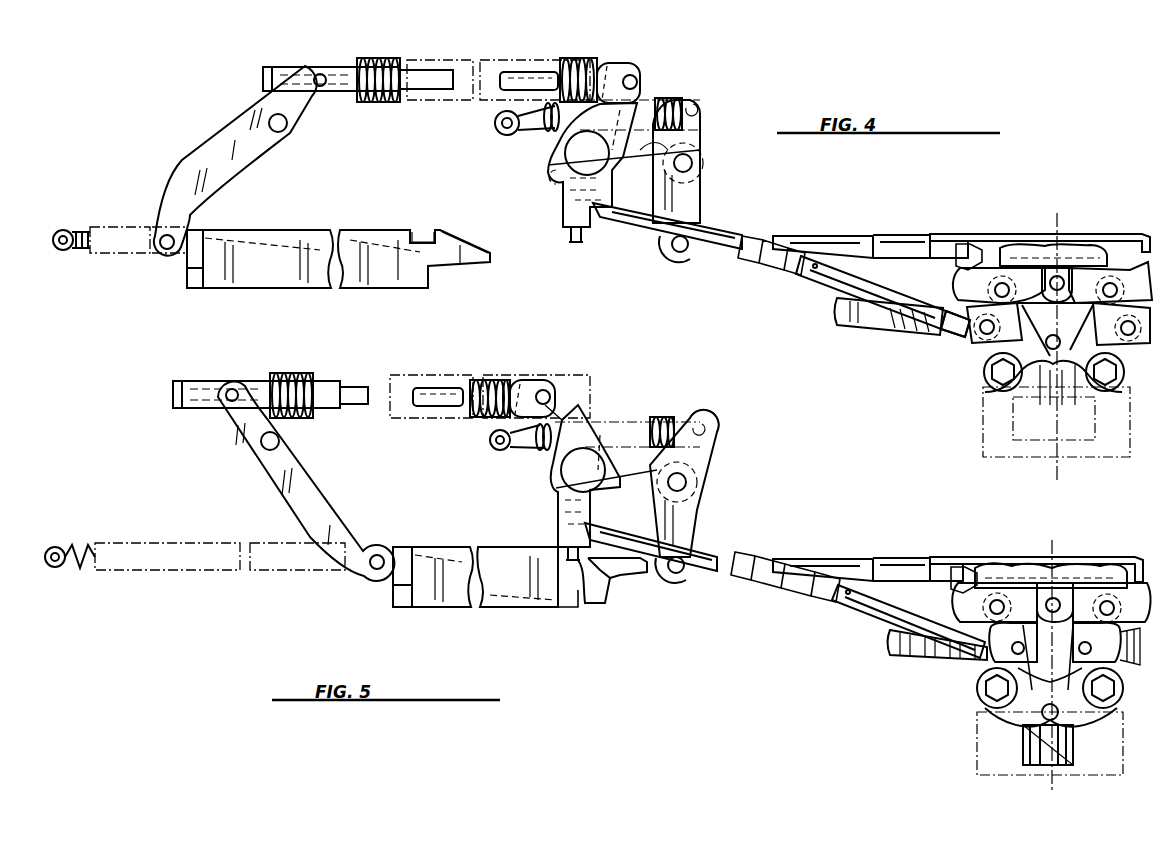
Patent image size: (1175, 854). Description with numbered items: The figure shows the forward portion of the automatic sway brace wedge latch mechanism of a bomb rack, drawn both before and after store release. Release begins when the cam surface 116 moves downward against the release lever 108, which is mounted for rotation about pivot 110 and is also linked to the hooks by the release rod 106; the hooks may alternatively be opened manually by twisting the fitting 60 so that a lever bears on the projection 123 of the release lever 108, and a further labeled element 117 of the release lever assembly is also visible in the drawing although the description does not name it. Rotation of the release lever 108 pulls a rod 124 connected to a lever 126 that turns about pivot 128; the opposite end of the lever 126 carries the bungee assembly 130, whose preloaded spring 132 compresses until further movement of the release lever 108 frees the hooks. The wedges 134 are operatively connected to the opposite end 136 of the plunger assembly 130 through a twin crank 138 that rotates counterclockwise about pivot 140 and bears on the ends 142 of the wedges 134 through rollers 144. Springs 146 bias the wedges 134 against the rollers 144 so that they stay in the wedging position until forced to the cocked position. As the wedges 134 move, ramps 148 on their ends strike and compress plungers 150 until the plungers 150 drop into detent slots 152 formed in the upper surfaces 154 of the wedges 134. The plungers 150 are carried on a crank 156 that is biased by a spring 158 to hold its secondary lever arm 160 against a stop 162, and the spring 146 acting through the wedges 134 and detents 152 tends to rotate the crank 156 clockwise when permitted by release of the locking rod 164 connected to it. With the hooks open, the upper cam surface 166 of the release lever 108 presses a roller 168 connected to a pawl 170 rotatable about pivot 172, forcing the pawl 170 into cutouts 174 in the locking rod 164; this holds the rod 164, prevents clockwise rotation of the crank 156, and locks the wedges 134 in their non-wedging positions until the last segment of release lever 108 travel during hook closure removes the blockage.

In FIG. 4, the fitting 60 is at (1037, 380).
In FIG. 5, the fitting 60 is at (1050, 721).
In FIG. 4, the release rod 106 is at (880, 322).
In FIG. 5, the release rod 106 is at (912, 650).
In FIG. 4, the release lever 108 is at (1000, 340).
In FIG. 5, the release lever 108 is at (993, 652).
In FIG. 4, the pivot 110 is at (1000, 372).
In FIG. 5, the pivot 110 is at (990, 690).
In FIG. 4, the cam surface 116 is at (1052, 322).
In FIG. 4, the base member 117 is at (1048, 352).
In FIG. 5, the base member 117 is at (1023, 732).
In FIG. 4, the projection 123 is at (1057, 356).
In FIG. 5, the projection 123 is at (1040, 708).
In FIG. 4, the rod 124 is at (835, 276).
In FIG. 5, the rod 124 is at (868, 612).
In FIG. 4, the lever 126 is at (548, 170).
In FIG. 5, the lever 126 is at (574, 405).
In FIG. 4, the pivot 128 is at (565, 160).
In FIG. 5, the pivot 128 is at (560, 470).
In FIG. 4, the bungee assembly 130 is at (527, 62).
In FIG. 5, the bungee assembly 130 is at (418, 375).
In FIG. 4, the preloaded spring 132 is at (398, 66).
In FIG. 5, the preloaded spring 132 is at (297, 373).
In FIG. 4, the wedges 134 is at (333, 232).
In FIG. 5, the wedges 134 is at (488, 547).
In FIG. 4, the opposite end 136 is at (287, 67).
In FIG. 5, the opposite end 136 is at (210, 356).
In FIG. 4, the twin crank 138 is at (245, 170).
In FIG. 5, the twin crank 138 is at (306, 474).
In FIG. 4, the pivot 140 is at (288, 125).
In FIG. 5, the pivot 140 is at (282, 442).
In FIG. 4, the ends of the wedges 142 is at (190, 283).
In FIG. 5, the ends of the wedges 142 is at (392, 588).
In FIG. 4, the rollers 144 is at (156, 247).
In FIG. 5, the rollers 144 is at (382, 546).
In FIG. 4, the springs 146 is at (136, 225).
In FIG. 5, the springs 146 is at (170, 540).
In FIG. 4, the ramps 148 is at (468, 254).
In FIG. 5, the ramps 148 is at (642, 573).
In FIG. 4, the plungers 150 is at (572, 243).
In FIG. 5, the plungers 150 is at (566, 552).
In FIG. 4, the detent slots 152 is at (423, 232).
In FIG. 5, the detent slots 152 is at (596, 597).
In FIG. 5, the upper surfaces 154 is at (530, 547).
In FIG. 4, the crank 156 is at (702, 186).
In FIG. 5, the crank 156 is at (697, 500).
In FIG. 4, the spring 158 is at (672, 100).
In FIG. 5, the spring 158 is at (663, 416).
In FIG. 4, the secondary lever arm 160 is at (700, 150).
In FIG. 5, the secondary lever arm 160 is at (697, 465).
In FIG. 4, the stop 162 is at (640, 216).
In FIG. 5, the stop 162 is at (698, 520).
In FIG. 4, the locking rod 164 is at (862, 227).
In FIG. 5, the locking rod 164 is at (878, 557).
In FIG. 4, the upper cam surface 166 is at (942, 333).
In FIG. 5, the upper cam surface 166 is at (1025, 636).
In FIG. 4, the roller 168 is at (962, 273).
In FIG. 5, the roller 168 is at (1029, 601).
In FIG. 4, the pawl 170 is at (985, 268).
In FIG. 5, the pawl 170 is at (985, 568).
In FIG. 5, the pivot 172 is at (1056, 598).
In FIG. 4, the cutouts 174 is at (982, 244).
In FIG. 5, the cutouts 174 is at (950, 568).